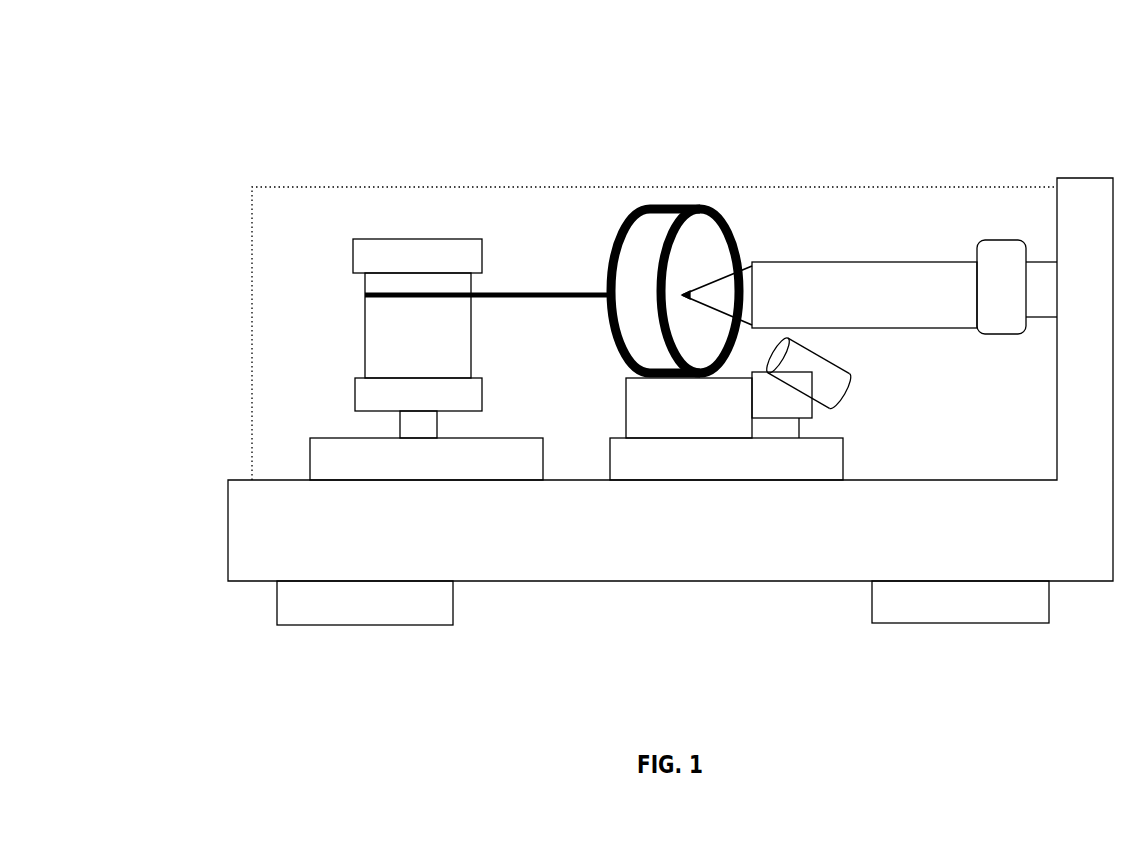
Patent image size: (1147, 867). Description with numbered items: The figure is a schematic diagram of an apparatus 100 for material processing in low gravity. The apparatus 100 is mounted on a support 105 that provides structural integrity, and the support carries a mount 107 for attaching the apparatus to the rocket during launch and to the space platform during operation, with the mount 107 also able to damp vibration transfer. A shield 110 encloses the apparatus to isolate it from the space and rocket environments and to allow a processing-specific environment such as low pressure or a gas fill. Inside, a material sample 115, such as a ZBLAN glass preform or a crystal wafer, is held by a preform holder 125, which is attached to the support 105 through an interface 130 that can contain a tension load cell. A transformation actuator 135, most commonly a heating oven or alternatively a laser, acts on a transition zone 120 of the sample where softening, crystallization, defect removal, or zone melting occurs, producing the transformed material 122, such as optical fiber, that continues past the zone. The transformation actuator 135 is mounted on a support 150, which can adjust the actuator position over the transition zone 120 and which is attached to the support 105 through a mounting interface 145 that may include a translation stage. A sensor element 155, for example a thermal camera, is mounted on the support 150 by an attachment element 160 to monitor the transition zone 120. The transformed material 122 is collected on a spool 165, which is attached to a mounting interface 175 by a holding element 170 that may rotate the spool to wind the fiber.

The apparatus 100 is at (223, 137).
The support 105 is at (240, 547).
The mount 107 is at (907, 600).
The shield 110 is at (368, 190).
The material sample 115 is at (838, 290).
The transition zone 120 is at (726, 292).
The transformed material 122 is at (537, 292).
The preform holder 125 is at (1000, 263).
The interface 130 is at (1045, 280).
The transformation actuator 135 is at (657, 235).
The mounting interface 145 is at (630, 453).
The support 150 is at (653, 405).
The sensor element 155 is at (818, 370).
The attachment element 160 is at (798, 402).
The spool 165 is at (392, 328).
The holding element 170 is at (413, 425).
The mounting interface 175 is at (372, 460).